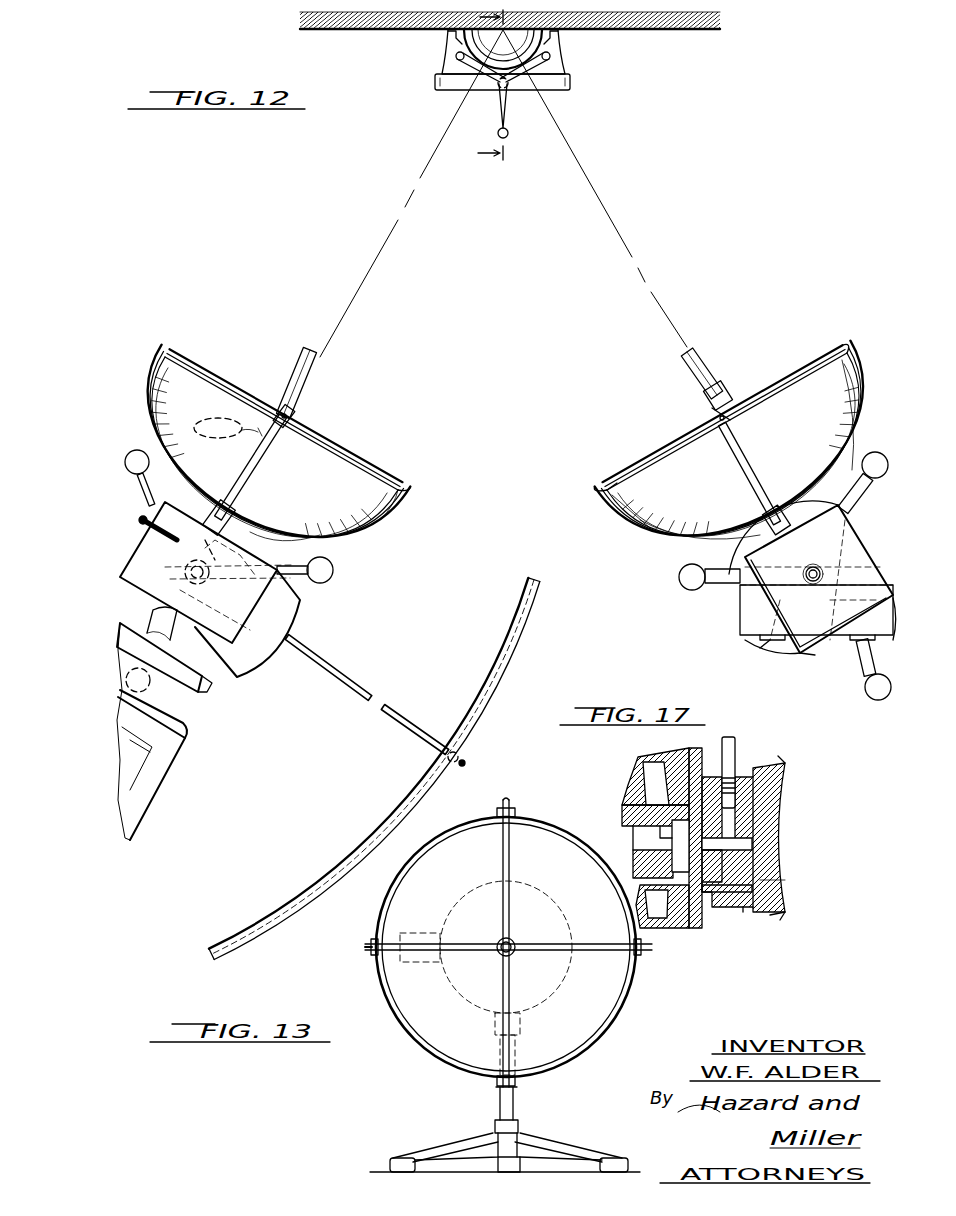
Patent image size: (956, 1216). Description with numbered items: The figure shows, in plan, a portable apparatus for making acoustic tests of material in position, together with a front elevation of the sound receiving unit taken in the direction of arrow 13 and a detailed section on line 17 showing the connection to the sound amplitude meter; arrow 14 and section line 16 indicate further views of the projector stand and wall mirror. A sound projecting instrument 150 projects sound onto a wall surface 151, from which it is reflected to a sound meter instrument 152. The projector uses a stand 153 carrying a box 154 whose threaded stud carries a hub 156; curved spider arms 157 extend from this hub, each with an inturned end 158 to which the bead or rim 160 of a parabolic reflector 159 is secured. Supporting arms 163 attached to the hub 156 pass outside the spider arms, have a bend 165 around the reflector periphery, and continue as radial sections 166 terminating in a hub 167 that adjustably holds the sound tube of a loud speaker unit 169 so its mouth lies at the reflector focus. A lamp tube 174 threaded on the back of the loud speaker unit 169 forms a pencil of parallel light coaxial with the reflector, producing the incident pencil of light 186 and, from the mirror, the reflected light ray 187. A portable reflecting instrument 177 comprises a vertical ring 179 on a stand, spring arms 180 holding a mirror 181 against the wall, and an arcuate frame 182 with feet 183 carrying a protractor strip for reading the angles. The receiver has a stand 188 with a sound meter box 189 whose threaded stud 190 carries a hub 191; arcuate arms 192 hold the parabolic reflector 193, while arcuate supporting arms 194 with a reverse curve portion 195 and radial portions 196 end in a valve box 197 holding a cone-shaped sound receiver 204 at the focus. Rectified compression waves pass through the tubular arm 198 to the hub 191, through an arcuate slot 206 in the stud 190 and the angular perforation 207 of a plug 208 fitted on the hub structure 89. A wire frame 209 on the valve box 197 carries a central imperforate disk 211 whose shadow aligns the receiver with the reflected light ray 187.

In FIG. 12, the arrow 13 is at (366, 348).
In FIG. 12, the arrow 14 is at (661, 350).
In FIG. 12, the section line 16— 16 is at (479, 87).
In FIG. 12, the section line 17— 17 is at (245, 496).
In FIG. 17, the hub structure 89 is at (625, 810).
In FIG. 12, the sound projecting instrument 150 is at (646, 436).
In FIG. 12, the wall surface 151 is at (678, 31).
In FIG. 12, the sound meter instrument 152 is at (196, 341).
In FIG. 13, the sound meter instrument 152 is at (366, 972).
In FIG. 17, the sound meter instrument 152 is at (797, 775).
In FIG. 12, the stand 153 is at (715, 600).
In FIG. 12, the box 154 is at (806, 649).
In FIG. 12, the hub 156 is at (755, 520).
In FIG. 12, the curved spider arms 157 is at (850, 441).
In FIG. 12, the inturned end 158 is at (604, 512).
In FIG. 12, the parabolic reflector 159 is at (652, 527).
In FIG. 12, the bead or rim 160 is at (612, 480).
In FIG. 12, the supporting arms 163 is at (679, 556).
In FIG. 12, the bend 165 is at (855, 342).
In FIG. 12, the radial sections 166 is at (804, 370).
In FIG. 12, the hub 167 is at (706, 418).
In FIG. 12, the loud speaker unit 169 is at (716, 387).
In FIG. 12, the lamp tube 174 is at (690, 352).
In FIG. 12, the portable reflecting instrument 177 is at (426, 89).
In FIG. 12, the vertical ring 179 is at (558, 88).
In FIG. 12, the spring arms 180 is at (550, 57).
In FIG. 12, the mirror 181 is at (448, 36).
In FIG. 12, the arcuate frame 182 is at (456, 58).
In FIG. 12, the feet 183 is at (555, 36).
In FIG. 12, the incident pencil of light 186 is at (626, 242).
In FIG. 12, the reflected light ray 187 is at (386, 221).
In FIG. 13, the stand 188 is at (528, 1108).
In FIG. 12, the sound meter box 189 is at (295, 611).
In FIG. 13, the sound meter box 189 is at (462, 1007).
In FIG. 17, the sound meter box 189 is at (706, 741).
In FIG. 12, the threaded stud 190 is at (178, 553).
In FIG. 17, the threaded stud 190 is at (700, 895).
In FIG. 12, the hub 191 is at (240, 492).
In FIG. 17, the hub 191 is at (743, 910).
In FIG. 12, the arcuate arms 192 is at (345, 538).
In FIG. 13, the arcuate arms 192 is at (372, 946).
In FIG. 17, the arcuate arms 192 is at (785, 915).
In FIG. 12, the parabolic reflector 193 is at (342, 473).
In FIG. 13, the parabolic reflector 193 is at (377, 1003).
In FIG. 12, the arcuate supporting arms 194 is at (383, 531).
In FIG. 13, the arcuate supporting arms 194 is at (496, 875).
In FIG. 12, the reverse curve portion 195 is at (406, 503).
In FIG. 12, the radial portions 196 is at (336, 458).
In FIG. 13, the radial portions 196 is at (428, 940).
In FIG. 12, the valve box 197 is at (299, 421).
In FIG. 17, the tubular arm 198 is at (728, 762).
In FIG. 12, the cone-shaped sound receiver 204 is at (228, 428).
In FIG. 17, the arcuate slot 206 is at (728, 802).
In FIG. 17, the angular perforation 207 is at (724, 848).
In FIG. 17, the plug 208 is at (742, 868).
In FIG. 12, the wire frame 209 is at (290, 375).
In FIG. 13, the wire frame 209 is at (518, 934).
In FIG. 13, the imperforate disk 211 is at (503, 955).